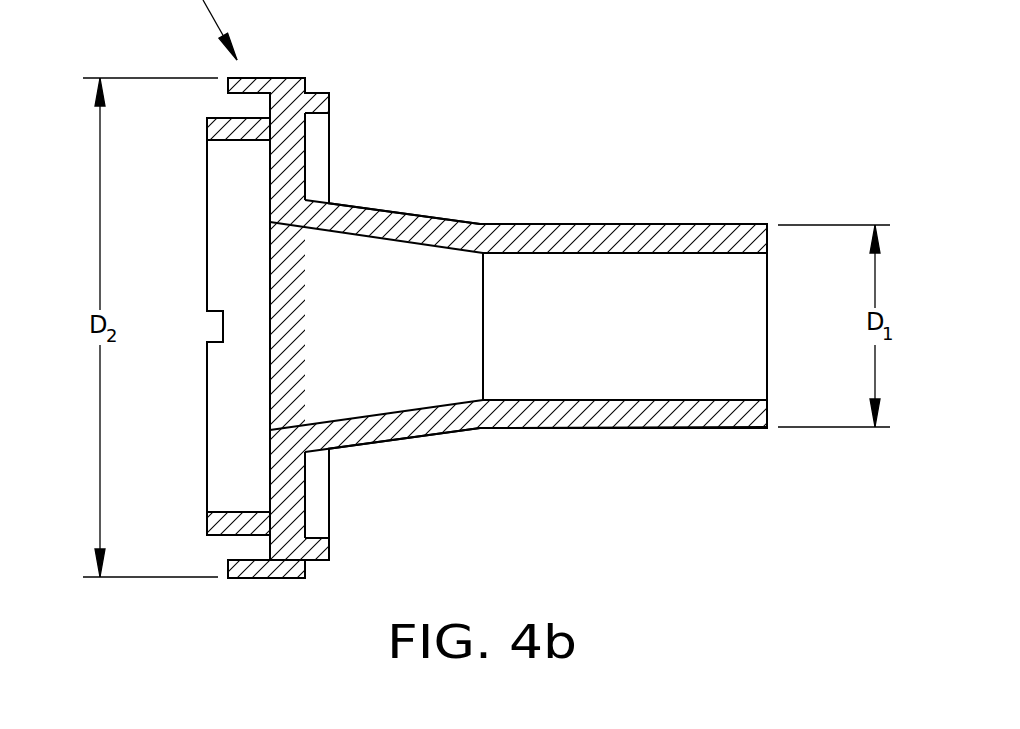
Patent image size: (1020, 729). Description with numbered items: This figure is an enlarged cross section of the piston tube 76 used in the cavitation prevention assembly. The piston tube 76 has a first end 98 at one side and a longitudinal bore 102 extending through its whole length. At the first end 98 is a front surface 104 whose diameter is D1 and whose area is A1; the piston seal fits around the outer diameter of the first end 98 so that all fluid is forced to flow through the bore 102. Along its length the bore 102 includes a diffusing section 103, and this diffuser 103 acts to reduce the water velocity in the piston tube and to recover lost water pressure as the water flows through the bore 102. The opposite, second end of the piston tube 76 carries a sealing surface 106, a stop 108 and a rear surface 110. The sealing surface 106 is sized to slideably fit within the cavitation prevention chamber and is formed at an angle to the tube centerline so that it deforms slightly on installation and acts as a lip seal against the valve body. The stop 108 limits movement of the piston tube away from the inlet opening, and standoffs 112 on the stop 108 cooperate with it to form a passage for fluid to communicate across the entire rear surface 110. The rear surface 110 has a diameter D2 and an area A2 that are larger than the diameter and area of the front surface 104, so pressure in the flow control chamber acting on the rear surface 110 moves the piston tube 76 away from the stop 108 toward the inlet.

The piston tube 76 is at (692, 537).
The first end 98 is at (740, 200).
The longitudinal bore 102 is at (707, 335).
The diffusing section 103 is at (397, 334).
The front surface 104 is at (767, 238).
The sealing surface 106 is at (240, 577).
The stop 108 is at (207, 525).
The rear surface 110 is at (271, 477).
The standoffs 112 is at (212, 117).